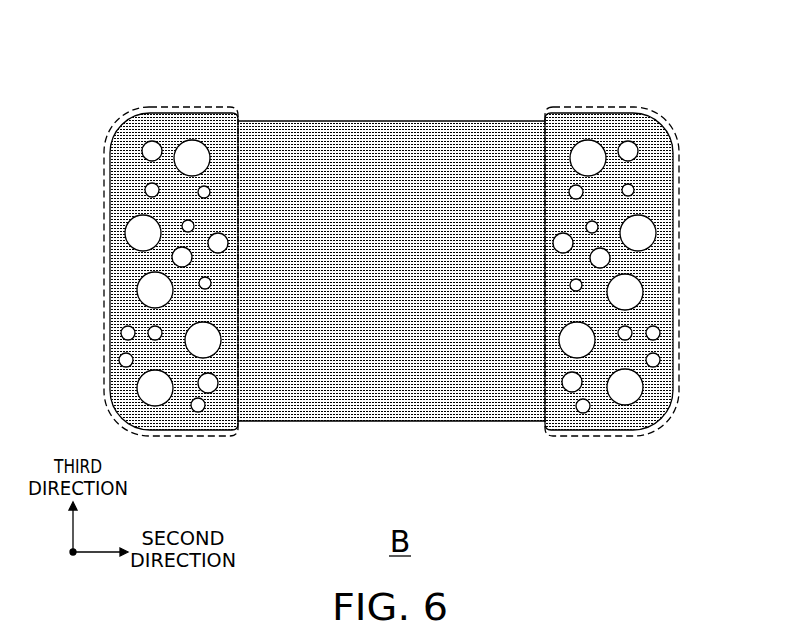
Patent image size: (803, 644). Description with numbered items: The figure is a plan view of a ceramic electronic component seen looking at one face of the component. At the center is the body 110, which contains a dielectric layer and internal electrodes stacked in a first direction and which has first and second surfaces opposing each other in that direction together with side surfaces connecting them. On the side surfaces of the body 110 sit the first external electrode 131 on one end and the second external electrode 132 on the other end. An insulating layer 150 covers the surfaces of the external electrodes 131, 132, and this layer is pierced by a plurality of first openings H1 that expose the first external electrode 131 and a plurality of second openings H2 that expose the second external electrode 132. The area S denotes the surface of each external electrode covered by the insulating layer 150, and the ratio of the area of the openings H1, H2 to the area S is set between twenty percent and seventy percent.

The body 110 is at (394, 120).
The first external electrode 131 is at (173, 112).
The second external electrode 132 is at (596, 112).
The insulating layer 150 is at (400, 422).
The first opening H1 is at (146, 148).
The second opening H2 is at (645, 237).
The area of the surface of the external electrode covered by the insulating layer S is at (103, 197).